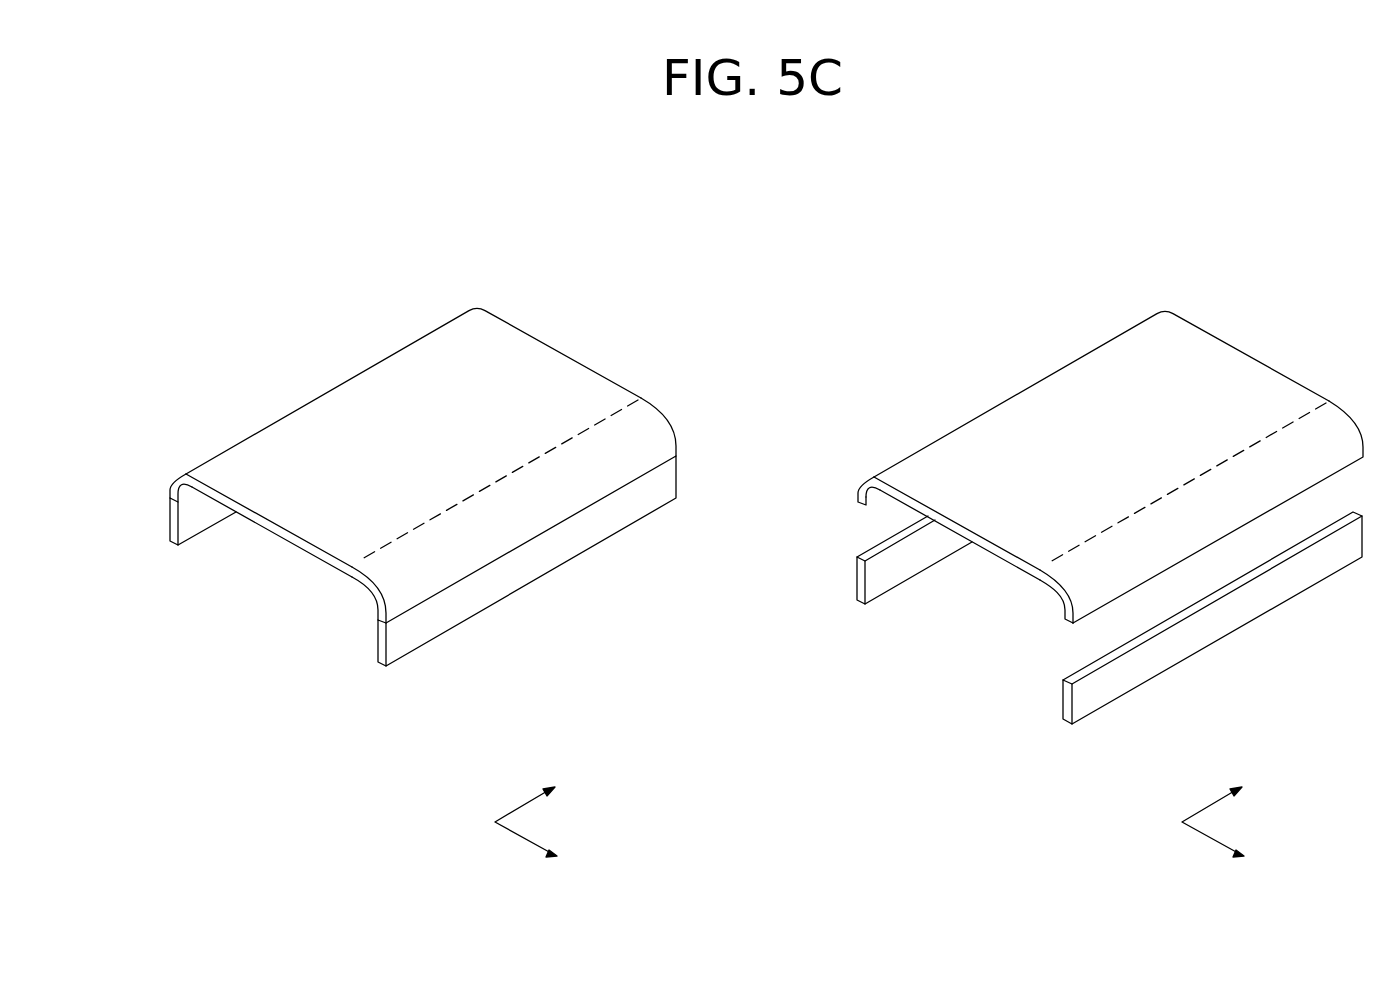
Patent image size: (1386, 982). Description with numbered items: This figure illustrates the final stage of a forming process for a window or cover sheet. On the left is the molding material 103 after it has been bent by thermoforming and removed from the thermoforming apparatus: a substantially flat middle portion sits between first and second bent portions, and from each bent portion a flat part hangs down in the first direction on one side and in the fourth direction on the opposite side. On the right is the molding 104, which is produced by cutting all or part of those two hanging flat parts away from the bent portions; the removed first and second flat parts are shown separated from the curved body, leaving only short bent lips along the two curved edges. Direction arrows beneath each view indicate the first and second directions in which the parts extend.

The molding material 103 is at (690, 243).
The molding 104 is at (1375, 247).